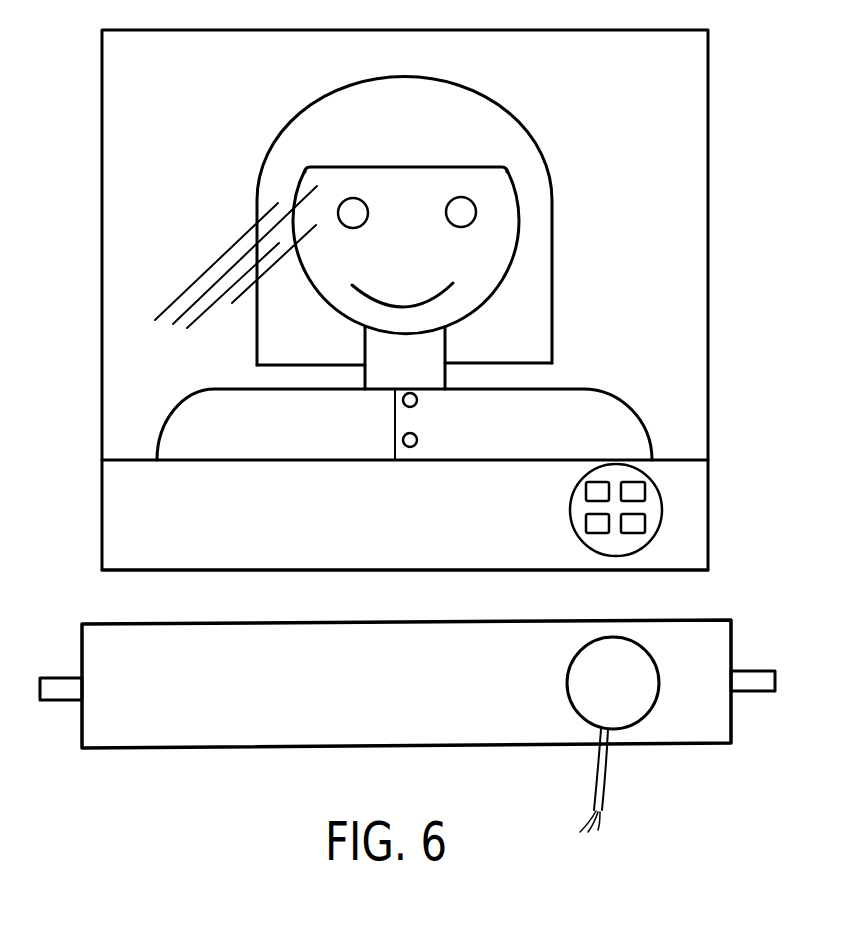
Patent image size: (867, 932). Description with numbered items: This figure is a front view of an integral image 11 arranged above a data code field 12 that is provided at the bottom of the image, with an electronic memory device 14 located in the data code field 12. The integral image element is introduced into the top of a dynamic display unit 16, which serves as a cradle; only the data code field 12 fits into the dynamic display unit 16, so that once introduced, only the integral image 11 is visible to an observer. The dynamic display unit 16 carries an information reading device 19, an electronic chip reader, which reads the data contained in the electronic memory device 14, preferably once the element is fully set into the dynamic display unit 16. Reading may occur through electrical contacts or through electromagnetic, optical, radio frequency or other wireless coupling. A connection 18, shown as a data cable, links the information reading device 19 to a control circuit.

The integral image 11 is at (122, 197).
The data code field 12 is at (113, 520).
The electronic memory device 14 is at (652, 506).
The dynamic display unit 16 is at (222, 730).
The connection 18 is at (604, 766).
The information reading device 19 is at (640, 670).